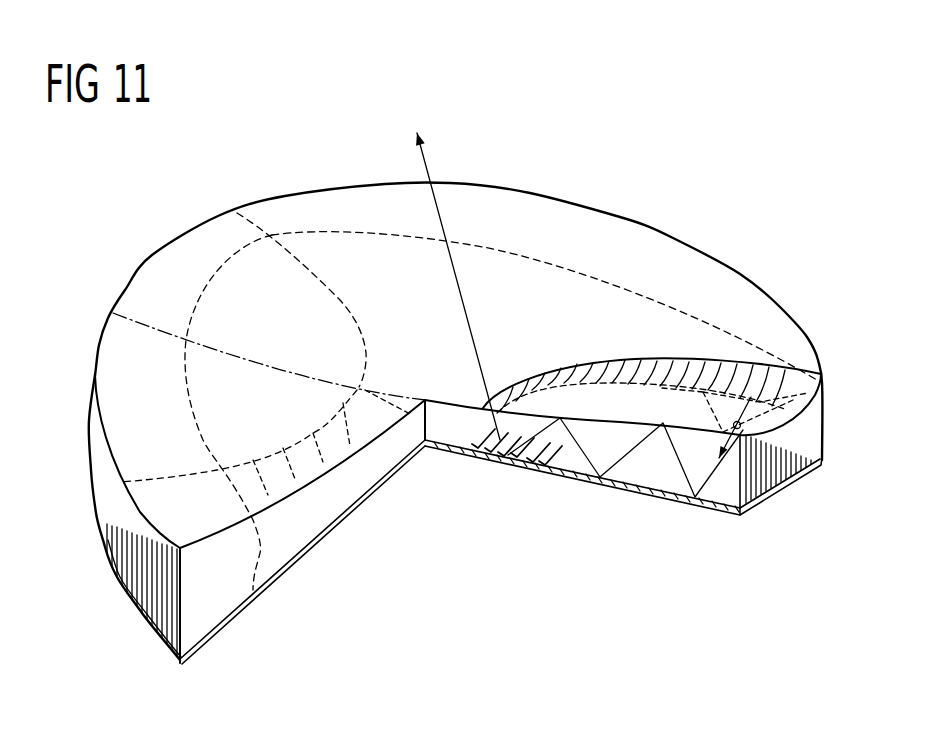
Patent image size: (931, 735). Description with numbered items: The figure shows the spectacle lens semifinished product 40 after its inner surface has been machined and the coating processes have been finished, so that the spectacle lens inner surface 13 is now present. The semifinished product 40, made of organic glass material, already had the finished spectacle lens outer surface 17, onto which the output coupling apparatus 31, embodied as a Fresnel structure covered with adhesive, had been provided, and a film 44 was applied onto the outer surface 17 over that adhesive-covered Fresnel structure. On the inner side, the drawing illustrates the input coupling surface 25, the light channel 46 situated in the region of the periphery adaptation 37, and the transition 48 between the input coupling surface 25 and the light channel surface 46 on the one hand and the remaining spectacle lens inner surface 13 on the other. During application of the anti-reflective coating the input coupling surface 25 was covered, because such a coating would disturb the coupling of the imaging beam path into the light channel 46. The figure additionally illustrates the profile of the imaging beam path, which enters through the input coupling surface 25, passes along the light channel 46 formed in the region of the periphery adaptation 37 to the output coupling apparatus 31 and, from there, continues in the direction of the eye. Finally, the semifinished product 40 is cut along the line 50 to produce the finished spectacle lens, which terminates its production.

The spectacle lens semifinished product 40 is at (288, 173).
The spectacle lens inner surface 13 is at (522, 300).
The light channel 46 is at (580, 392).
The line 50 is at (652, 292).
The transition 48 is at (680, 377).
The input coupling surface 25 is at (737, 393).
The output coupling apparatus 31 is at (498, 468).
The periphery adaptation 37 is at (642, 510).
The film 44 is at (350, 527).
The spectacle lens outer surface 17 is at (297, 573).